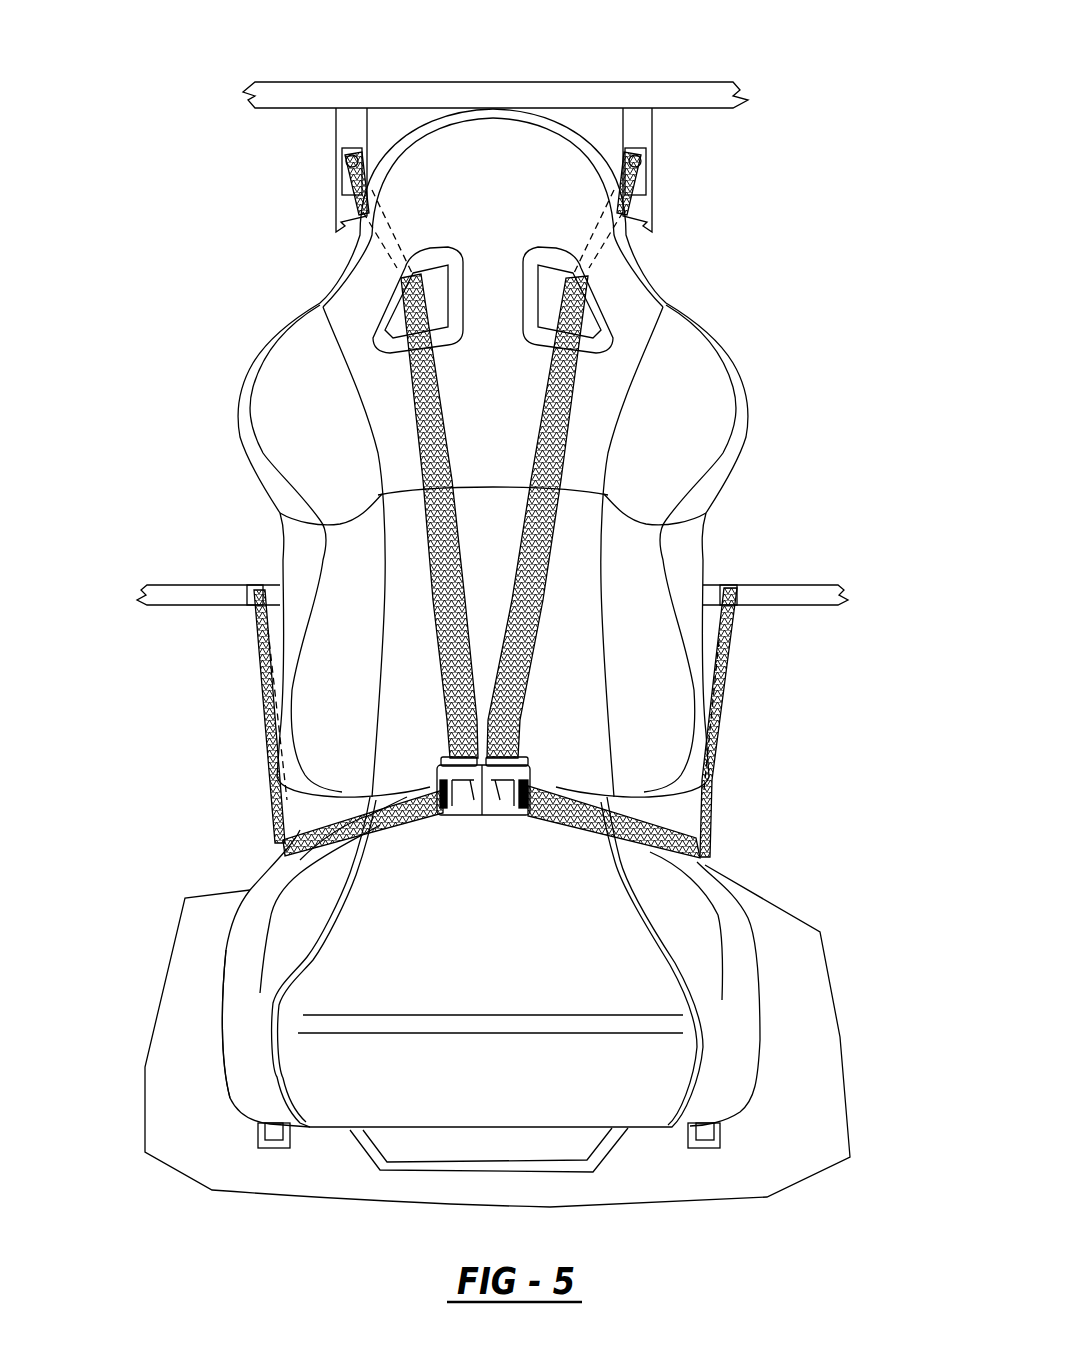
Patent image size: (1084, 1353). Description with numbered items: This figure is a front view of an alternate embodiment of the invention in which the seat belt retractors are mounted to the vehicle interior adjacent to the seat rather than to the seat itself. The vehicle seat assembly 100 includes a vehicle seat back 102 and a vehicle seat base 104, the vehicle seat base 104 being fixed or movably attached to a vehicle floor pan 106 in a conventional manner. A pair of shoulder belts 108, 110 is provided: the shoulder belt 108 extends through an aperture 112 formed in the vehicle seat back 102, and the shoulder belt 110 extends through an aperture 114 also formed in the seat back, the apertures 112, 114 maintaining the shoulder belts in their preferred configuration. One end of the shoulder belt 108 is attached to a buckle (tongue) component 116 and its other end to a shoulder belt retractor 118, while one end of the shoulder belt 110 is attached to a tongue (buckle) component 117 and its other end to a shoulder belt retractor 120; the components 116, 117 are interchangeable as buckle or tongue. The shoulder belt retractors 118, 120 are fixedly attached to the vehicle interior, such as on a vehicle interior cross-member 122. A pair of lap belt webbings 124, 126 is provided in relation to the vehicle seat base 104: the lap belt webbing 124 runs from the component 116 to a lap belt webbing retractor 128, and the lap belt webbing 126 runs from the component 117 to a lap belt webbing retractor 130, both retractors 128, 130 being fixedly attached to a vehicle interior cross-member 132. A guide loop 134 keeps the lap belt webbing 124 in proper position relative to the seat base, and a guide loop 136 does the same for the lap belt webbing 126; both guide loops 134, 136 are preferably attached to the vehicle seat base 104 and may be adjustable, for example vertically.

The vehicle seat assembly 100 is at (847, 162).
The vehicle seat back 102 is at (667, 372).
The vehicle seat base 104 is at (698, 921).
The vehicle floor pan 106 is at (670, 1182).
The shoulder belt 108 is at (423, 417).
The shoulder belt 110 is at (560, 417).
The aperture 112 is at (400, 330).
The aperture 114 is at (592, 327).
The buckle (tongue) component 116 is at (463, 790).
The tongue (buckle) component 117 is at (510, 795).
The shoulder belt retractor 118 is at (342, 160).
The shoulder belt retractor 120 is at (653, 158).
The vehicle interior cross-member 122 is at (430, 97).
The lap belt webbing 124 is at (260, 918).
The lap belt webbing 126 is at (705, 810).
The lap belt webbing retractor 128 is at (252, 607).
The lap belt webbing retractor 130 is at (730, 587).
The vehicle interior cross-member 132 is at (212, 597).
The guide loop 134 is at (273, 859).
The guide loop 136 is at (703, 858).